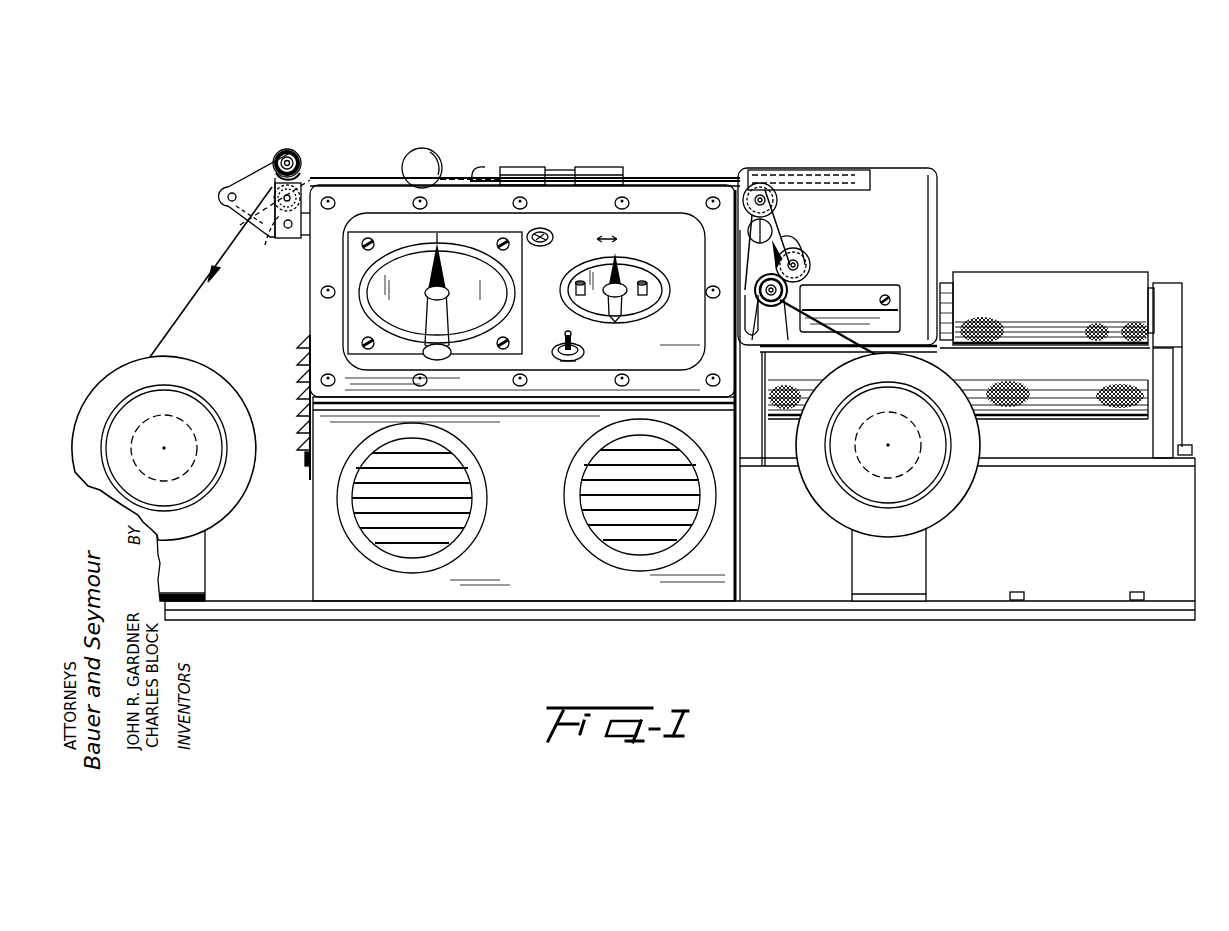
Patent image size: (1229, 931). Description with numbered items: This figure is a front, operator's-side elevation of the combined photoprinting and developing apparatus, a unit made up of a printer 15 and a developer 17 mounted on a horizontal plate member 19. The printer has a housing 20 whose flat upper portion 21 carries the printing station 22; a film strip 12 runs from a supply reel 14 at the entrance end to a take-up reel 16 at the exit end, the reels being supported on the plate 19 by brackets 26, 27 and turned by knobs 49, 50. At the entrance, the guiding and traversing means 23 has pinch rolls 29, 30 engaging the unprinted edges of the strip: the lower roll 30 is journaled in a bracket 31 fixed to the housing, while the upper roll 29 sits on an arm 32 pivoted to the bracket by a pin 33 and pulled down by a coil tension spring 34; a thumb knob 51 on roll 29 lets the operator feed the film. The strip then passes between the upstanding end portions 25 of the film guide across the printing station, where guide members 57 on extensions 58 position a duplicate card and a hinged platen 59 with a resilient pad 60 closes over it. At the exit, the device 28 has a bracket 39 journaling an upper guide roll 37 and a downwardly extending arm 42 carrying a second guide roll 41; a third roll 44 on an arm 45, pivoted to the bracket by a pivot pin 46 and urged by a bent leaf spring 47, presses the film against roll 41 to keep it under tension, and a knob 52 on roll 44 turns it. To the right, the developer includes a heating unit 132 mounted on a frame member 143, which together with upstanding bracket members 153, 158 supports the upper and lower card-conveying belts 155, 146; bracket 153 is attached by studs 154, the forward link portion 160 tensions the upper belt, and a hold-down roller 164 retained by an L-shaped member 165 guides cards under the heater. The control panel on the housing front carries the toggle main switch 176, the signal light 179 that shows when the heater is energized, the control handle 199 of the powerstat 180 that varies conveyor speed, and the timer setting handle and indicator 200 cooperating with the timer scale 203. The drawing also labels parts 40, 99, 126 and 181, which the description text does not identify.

The film strip 12 is at (195, 288).
The supply reel 14 is at (212, 374).
The printer 15 is at (700, 180).
The take-up reel 16 is at (950, 386).
The developer 17 is at (956, 268).
The horizontal plate member 19 is at (745, 612).
The housing 20 is at (530, 592).
The upper portion of housing 21 is at (353, 188).
The printing station 22 is at (633, 172).
The entrance film guiding and traversing means 23 is at (252, 160).
The upstanding end portions 25 is at (486, 160).
The bracket 26 is at (200, 557).
The bracket 27 is at (920, 546).
The exit film strip traversing and guiding device 28 is at (785, 192).
The upper pinch roll 29 is at (283, 150).
The lower pinch roll 30 is at (300, 185).
The bracket 31 is at (272, 228).
The arm 32 is at (245, 176).
The pin 33 is at (226, 198).
The coil tension spring 34 is at (268, 250).
The upper guide roll 37 is at (770, 198).
The bracket 39 is at (733, 236).
The belt 40 is at (775, 214).
The second guide roll 41 is at (812, 276).
The arm 42 is at (798, 262).
The third roll 44 is at (775, 340).
The arm 45 is at (748, 302).
The pivot pin 46 is at (780, 228).
The bent leaf spring 47 is at (737, 268).
The knob 49 is at (215, 462).
The knob 50 is at (848, 470).
The thumb knob 51 is at (298, 157).
The knob 52 is at (762, 312).
The confronting members 57 is at (860, 190).
The extensions 58 is at (815, 176).
The platen 59 is at (547, 176).
The resilient pad 60 is at (568, 178).
The knob 99 is at (425, 150).
The louvered vent 126 is at (372, 546).
The heating unit 132 is at (940, 200).
The frame member 143 is at (748, 425).
The lower card-conveying belt 146 is at (1070, 418).
The bracket member 153 is at (1168, 398).
The studs 154 is at (1186, 446).
The upper conveyor belt 155 is at (1065, 272).
The bracket member 158 is at (1175, 330).
The forward link portion 160 is at (950, 292).
The hold-down roller 164 is at (920, 348).
The L-shaped member 165 is at (890, 288).
The main switch 176 is at (585, 350).
The signal light 179 is at (538, 247).
The powerstat 180 is at (615, 310).
The exposure time dial 181 is at (402, 310).
The control handle 199 is at (605, 293).
The setting handle and indicator 200 is at (458, 305).
The timer scale 203 is at (390, 260).